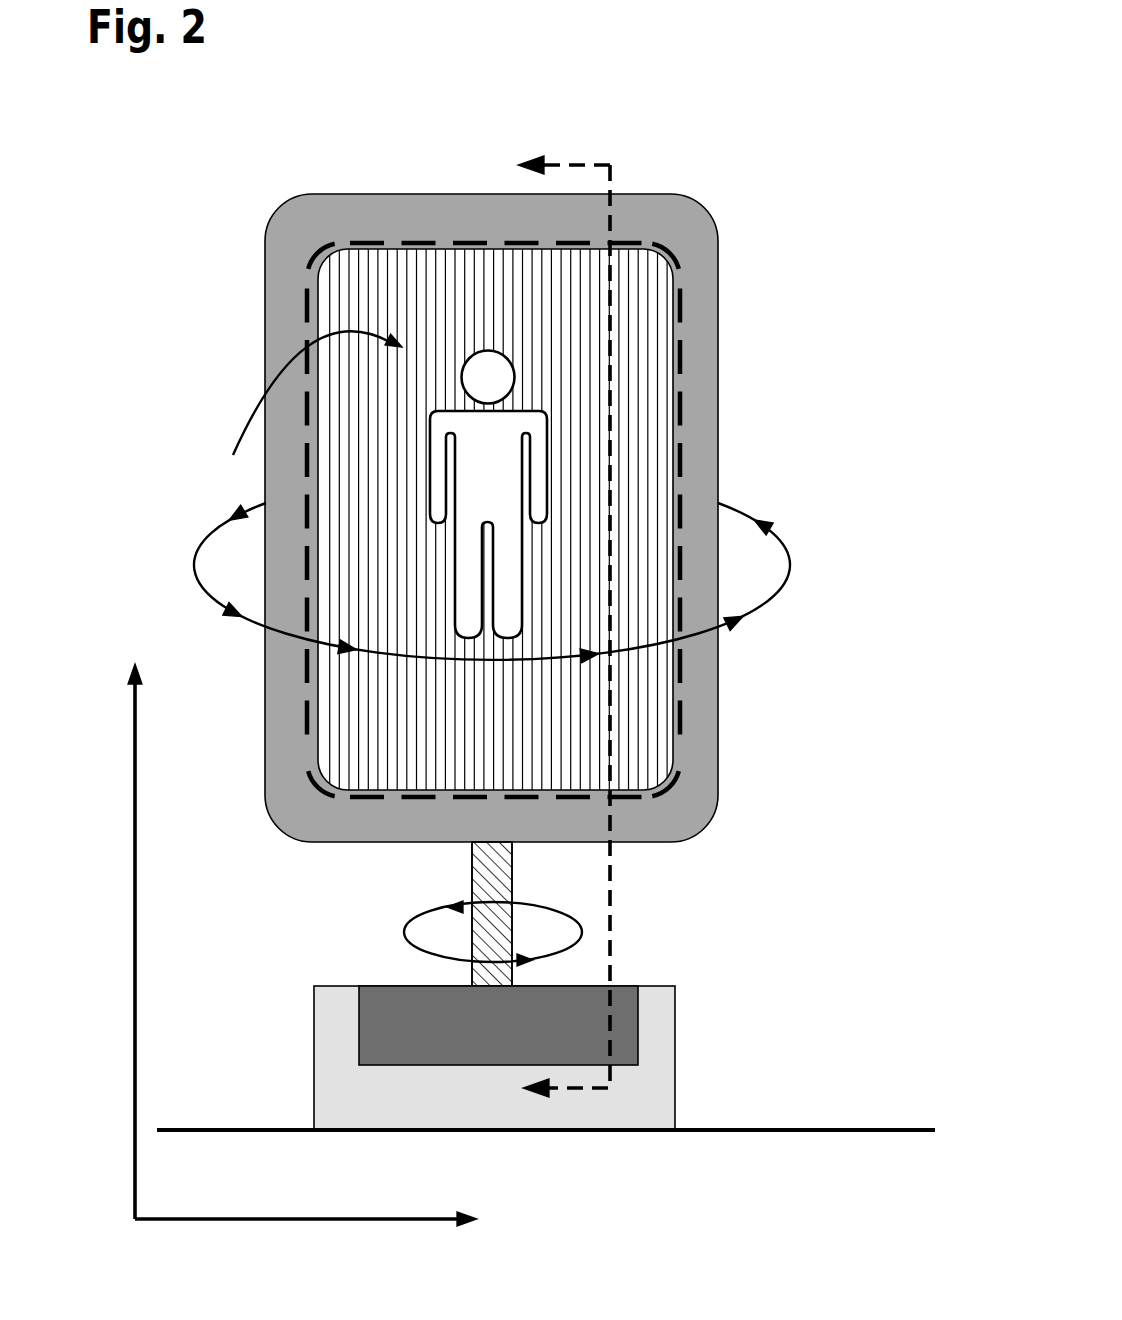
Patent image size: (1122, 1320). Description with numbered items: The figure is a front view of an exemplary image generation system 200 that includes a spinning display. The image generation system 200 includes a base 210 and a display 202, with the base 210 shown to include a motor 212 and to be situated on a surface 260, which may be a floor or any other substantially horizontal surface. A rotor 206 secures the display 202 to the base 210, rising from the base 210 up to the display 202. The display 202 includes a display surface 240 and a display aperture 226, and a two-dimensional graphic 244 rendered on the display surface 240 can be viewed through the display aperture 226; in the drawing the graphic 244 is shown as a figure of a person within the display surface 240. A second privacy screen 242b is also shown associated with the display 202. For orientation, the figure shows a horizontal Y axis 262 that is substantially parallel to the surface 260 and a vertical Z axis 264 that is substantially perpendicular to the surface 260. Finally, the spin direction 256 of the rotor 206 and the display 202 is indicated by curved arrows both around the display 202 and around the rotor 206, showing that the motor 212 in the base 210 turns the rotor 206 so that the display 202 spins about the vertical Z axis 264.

The image generation system 200 is at (300, 156).
The display 202 is at (718, 340).
The rotor 206 is at (526, 928).
The base 210 is at (652, 985).
The motor 212 is at (547, 1040).
The display aperture 226 is at (630, 246).
The display surface 240 is at (504, 307).
The second privacy screen 242b is at (302, 409).
The two-dimensional (2D) graphic 244 is at (544, 383).
The spin direction 256 is at (780, 600).
The surface 260 is at (225, 1128).
The horizontal Y axis 262 is at (299, 1217).
The vertical Z axis 264 is at (133, 856).